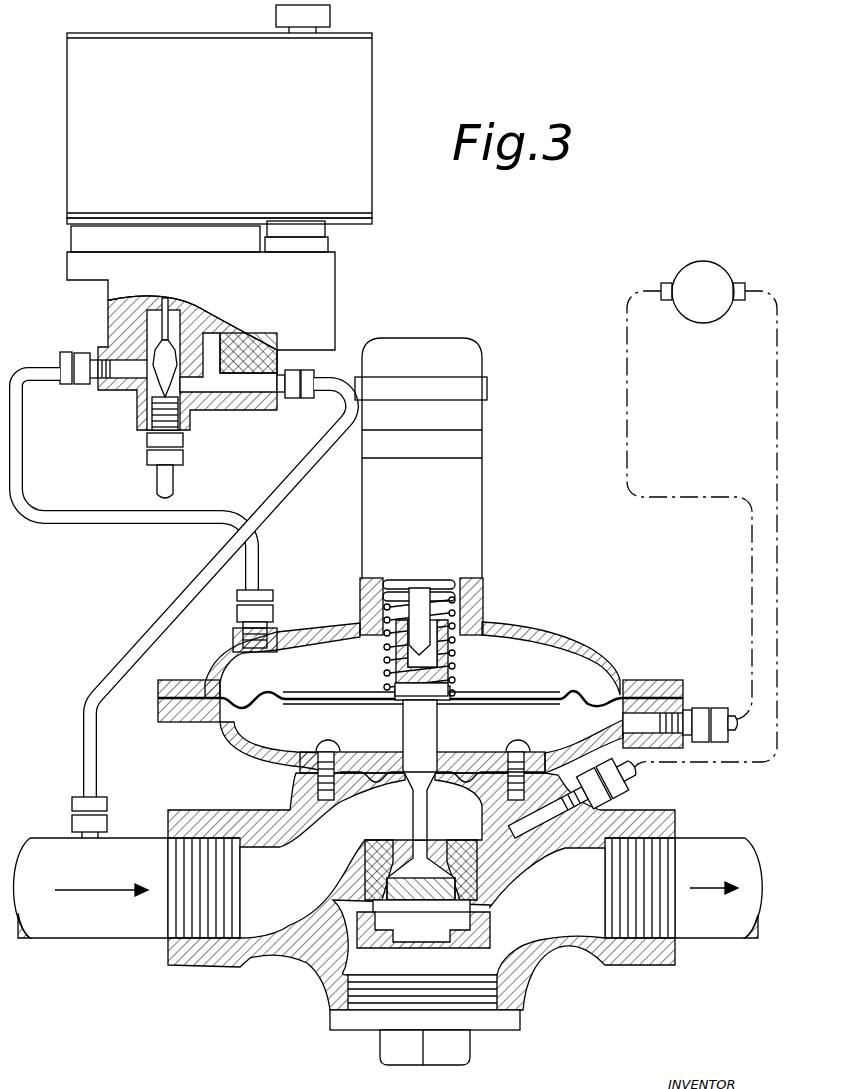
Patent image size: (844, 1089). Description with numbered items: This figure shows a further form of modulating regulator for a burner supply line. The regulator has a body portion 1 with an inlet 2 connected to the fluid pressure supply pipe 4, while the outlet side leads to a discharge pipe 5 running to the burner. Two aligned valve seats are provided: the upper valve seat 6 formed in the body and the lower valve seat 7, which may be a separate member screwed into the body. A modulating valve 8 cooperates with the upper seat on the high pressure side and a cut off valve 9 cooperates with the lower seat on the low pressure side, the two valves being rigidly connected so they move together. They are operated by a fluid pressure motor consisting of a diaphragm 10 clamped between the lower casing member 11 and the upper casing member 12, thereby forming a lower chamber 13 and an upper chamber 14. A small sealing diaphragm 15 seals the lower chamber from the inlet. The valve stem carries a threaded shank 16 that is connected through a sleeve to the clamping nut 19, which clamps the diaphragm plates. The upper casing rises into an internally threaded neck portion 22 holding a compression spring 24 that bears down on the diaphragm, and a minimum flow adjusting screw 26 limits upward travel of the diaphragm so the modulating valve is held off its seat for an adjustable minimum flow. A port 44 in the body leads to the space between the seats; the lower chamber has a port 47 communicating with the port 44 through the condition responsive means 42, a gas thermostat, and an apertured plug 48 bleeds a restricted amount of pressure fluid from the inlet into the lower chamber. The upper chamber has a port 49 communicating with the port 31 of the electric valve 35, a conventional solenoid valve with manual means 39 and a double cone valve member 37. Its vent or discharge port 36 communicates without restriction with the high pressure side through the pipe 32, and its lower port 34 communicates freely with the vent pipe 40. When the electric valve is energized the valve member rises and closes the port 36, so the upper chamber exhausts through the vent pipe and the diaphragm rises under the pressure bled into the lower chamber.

The body portion 1 is at (297, 966).
The inlet 2 is at (264, 946).
The fluid pressure supply pipe 4 is at (70, 940).
The discharge pipe 5 is at (712, 940).
The upper valve seat 6 is at (432, 838).
The lower valve seat 7 is at (456, 928).
The modulating valve 8 is at (395, 866).
The cut off valve 9 is at (408, 912).
The diaphragm 10 is at (585, 690).
The lower casing member 11 is at (230, 752).
The upper casing member 12 is at (558, 630).
The lower chamber 13 is at (278, 752).
The upper chamber 14 is at (525, 632).
The small sealing diaphragm 15 is at (450, 770).
The threaded shank 16 is at (438, 732).
The clamping member or nut 19 is at (450, 672).
The internally threaded neck portion 22 is at (482, 478).
The compression spring 24 is at (458, 592).
The minimum flow adjusting screw or pin 26 is at (440, 629).
The port of electric solenoid valve 31 is at (126, 378).
The pipe 32 is at (280, 500).
The lower port of electric valve 34 is at (176, 398).
The electric valve 35 is at (219, 191).
The vent or discharge port 36 is at (168, 318).
The valve member 37 is at (212, 345).
The manual means 39 is at (276, 14).
The vent pipe 40 is at (157, 483).
The condition responsive means 42 is at (703, 262).
The port 44 is at (530, 845).
The port 47 is at (657, 692).
The apertured plug 48 is at (330, 760).
The port 49 is at (262, 650).